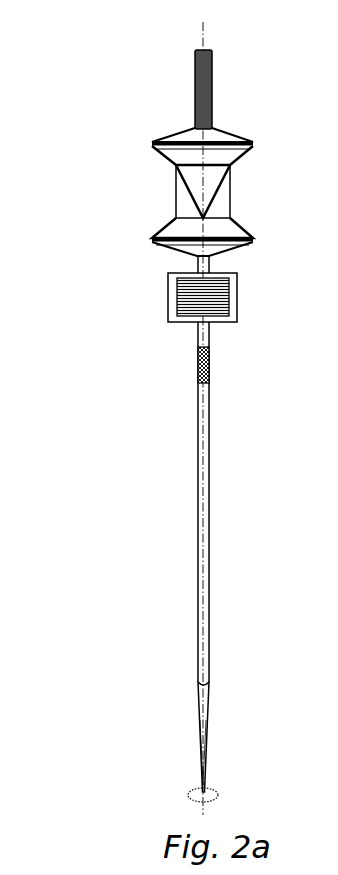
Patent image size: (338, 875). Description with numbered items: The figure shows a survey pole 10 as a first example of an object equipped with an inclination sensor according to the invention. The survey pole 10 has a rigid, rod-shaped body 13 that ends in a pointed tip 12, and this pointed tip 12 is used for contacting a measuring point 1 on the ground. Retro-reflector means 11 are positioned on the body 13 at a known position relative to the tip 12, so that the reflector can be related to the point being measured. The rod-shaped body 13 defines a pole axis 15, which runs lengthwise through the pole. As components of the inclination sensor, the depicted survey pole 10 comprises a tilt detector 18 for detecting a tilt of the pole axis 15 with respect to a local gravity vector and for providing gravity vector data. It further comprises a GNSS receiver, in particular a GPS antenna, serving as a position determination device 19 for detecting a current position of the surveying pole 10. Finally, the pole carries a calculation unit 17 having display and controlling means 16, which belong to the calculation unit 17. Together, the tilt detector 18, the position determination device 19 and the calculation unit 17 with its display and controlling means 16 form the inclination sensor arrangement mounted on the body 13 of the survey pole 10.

The measuring point 1 is at (182, 788).
The survey pole 10 is at (129, 252).
The retro-reflector means 11 is at (211, 182).
The pointed tip 12 is at (205, 765).
The rod-shaped body 13 is at (206, 540).
The pole axis 15 is at (203, 30).
The display and controlling means 16 is at (200, 307).
The calculation unit 17 is at (172, 296).
The tilt detector 18 is at (210, 365).
The position determination device 19 is at (208, 97).